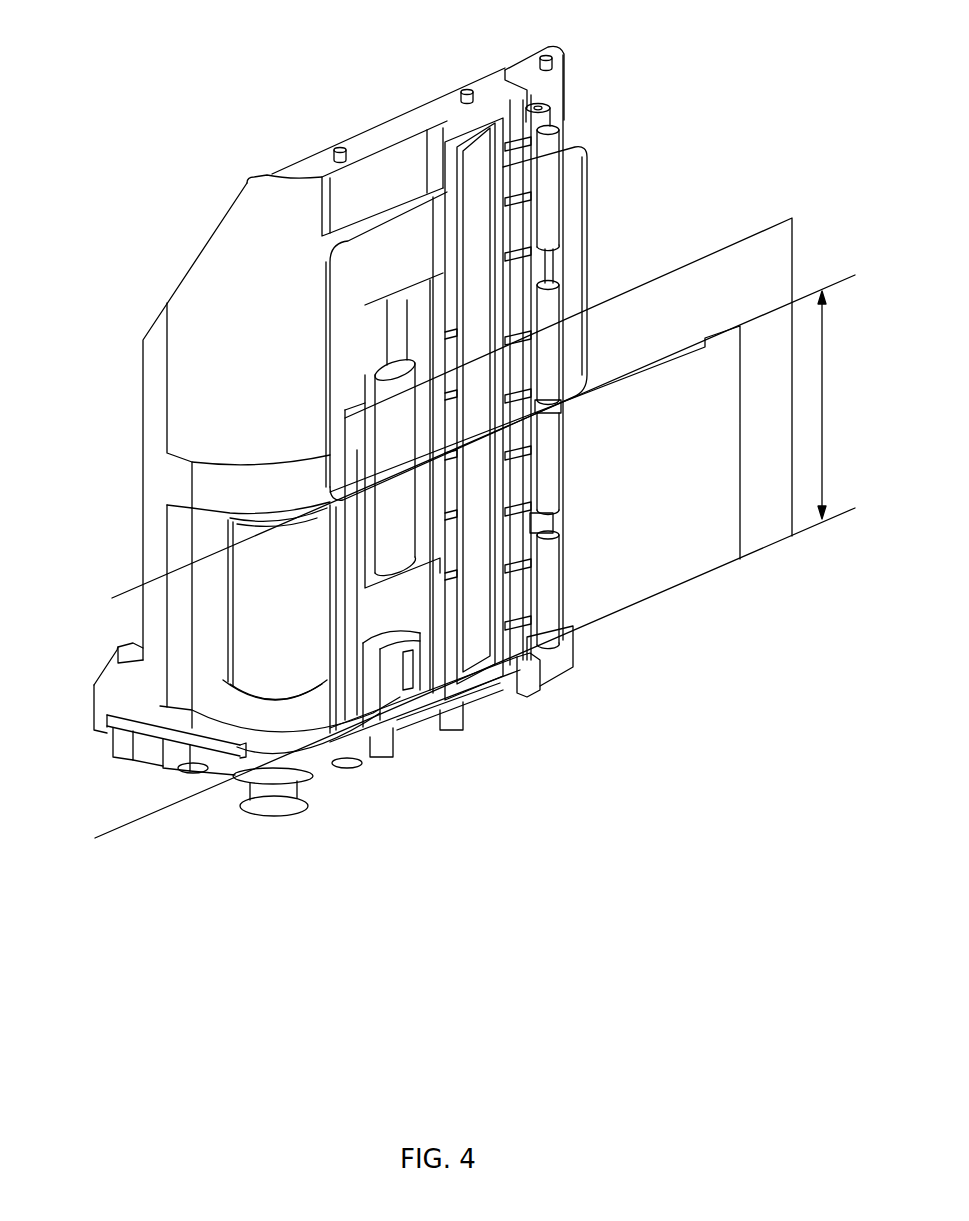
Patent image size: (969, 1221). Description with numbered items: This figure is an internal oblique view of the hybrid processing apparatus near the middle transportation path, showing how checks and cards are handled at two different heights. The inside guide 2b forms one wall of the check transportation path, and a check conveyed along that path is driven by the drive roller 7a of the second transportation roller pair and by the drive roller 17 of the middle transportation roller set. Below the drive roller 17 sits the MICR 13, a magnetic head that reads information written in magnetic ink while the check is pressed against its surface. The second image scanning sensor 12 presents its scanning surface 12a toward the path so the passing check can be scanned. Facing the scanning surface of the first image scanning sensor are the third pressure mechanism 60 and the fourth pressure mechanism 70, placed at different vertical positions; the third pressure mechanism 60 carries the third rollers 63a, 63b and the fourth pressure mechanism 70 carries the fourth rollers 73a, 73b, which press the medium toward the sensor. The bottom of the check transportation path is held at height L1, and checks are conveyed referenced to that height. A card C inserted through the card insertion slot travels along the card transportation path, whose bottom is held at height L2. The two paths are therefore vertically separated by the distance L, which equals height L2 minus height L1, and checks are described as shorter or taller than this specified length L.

The inside guide 2b is at (293, 171).
The drive roller 17 is at (403, 402).
The scanning surface 12a is at (467, 160).
The second image scanning sensor 12 is at (482, 148).
The third pressure mechanism 60 is at (589, 225).
The card C is at (590, 153).
The third roller 63a is at (552, 192).
The third roller 63b is at (548, 305).
The fourth pressure mechanism 70 is at (604, 524).
The fourth roller 73a is at (548, 487).
The fourth roller 73b is at (546, 575).
The drive roller 7a is at (247, 533).
The MICR 13 is at (402, 693).
The height L2 is at (502, 425).
The height L1 is at (494, 661).
The distance L is at (832, 405).